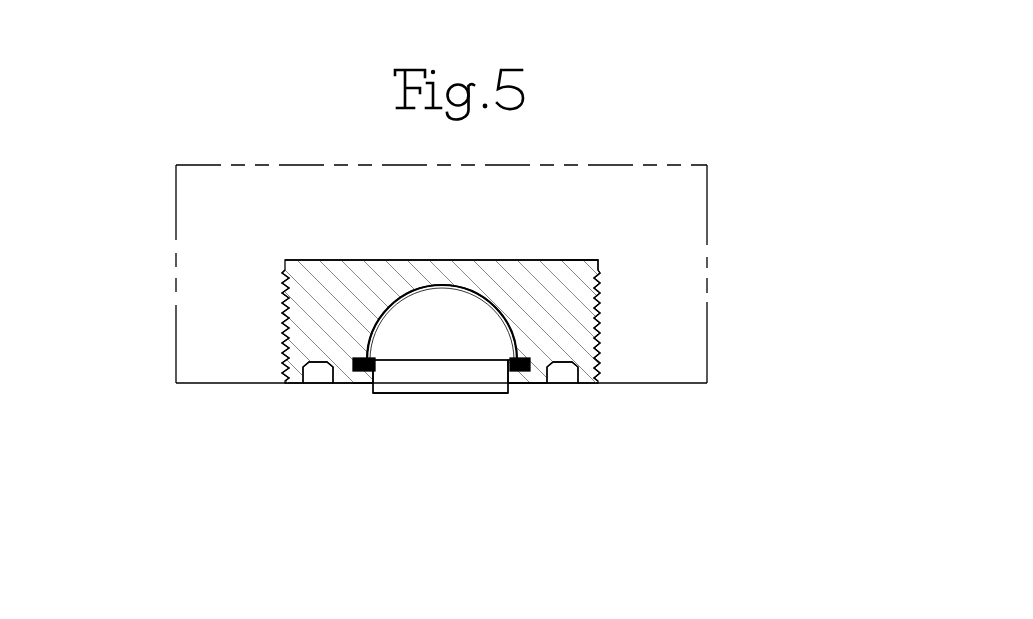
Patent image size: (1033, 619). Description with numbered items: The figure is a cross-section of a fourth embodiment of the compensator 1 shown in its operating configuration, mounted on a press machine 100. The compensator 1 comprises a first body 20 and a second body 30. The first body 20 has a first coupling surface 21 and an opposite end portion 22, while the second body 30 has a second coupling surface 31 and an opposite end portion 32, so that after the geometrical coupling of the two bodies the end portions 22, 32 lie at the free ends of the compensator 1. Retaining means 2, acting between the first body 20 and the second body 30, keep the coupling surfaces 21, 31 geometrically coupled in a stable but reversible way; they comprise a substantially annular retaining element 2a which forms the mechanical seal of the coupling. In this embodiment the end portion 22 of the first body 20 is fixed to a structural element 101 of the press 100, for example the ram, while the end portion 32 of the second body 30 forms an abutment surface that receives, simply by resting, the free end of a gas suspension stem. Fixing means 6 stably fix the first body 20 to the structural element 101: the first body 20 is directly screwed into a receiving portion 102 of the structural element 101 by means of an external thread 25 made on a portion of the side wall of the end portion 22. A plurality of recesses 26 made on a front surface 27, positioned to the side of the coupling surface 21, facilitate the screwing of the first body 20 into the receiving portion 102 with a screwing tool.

The press machine 100 is at (171, 140).
The structural element 101 is at (213, 383).
The receiving portion 102 is at (592, 257).
The compensator 1 is at (457, 413).
The retaining means 2 is at (358, 396).
The retaining element 2a is at (361, 358).
The fixing means 6 is at (263, 325).
The first body 20 is at (608, 305).
The first coupling surface 21 is at (440, 285).
The end portion 22 is at (327, 260).
The external thread 25 is at (316, 332).
The recesses 26 is at (320, 395).
The front surface 27 is at (533, 385).
The second body 30 is at (416, 408).
The second coupling surface 31 is at (440, 287).
The end portion 32 is at (393, 393).